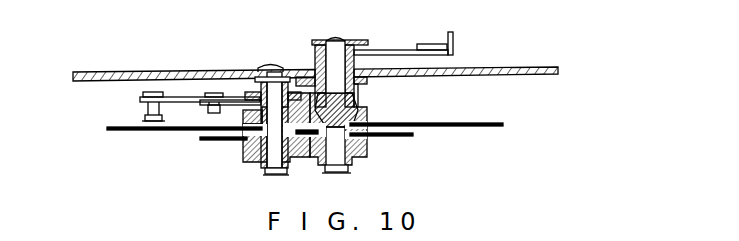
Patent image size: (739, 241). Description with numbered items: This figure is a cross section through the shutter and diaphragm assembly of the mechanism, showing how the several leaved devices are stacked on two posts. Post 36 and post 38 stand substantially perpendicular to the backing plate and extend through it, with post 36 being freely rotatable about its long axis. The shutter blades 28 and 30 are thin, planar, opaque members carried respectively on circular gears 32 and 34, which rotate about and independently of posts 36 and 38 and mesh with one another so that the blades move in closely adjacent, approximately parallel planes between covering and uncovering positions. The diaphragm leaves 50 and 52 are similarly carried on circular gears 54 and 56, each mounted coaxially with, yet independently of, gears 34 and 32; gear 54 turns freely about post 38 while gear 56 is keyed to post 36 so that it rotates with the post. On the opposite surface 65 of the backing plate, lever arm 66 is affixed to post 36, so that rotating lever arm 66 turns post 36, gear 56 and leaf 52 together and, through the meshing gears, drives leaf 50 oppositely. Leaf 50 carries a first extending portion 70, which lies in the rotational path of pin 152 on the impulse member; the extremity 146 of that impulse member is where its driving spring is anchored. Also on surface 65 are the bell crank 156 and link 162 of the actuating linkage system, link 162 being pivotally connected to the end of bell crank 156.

The blade 28 is at (200, 139).
The blade 30 is at (412, 137).
The circular gear 32 is at (357, 158).
The circular gear 34 is at (247, 158).
The post 36 is at (334, 55).
The post 38 is at (273, 83).
The leaf 50 is at (107, 129).
The leaf 52 is at (502, 127).
The circular gear 54 is at (243, 112).
The circular gear 56 is at (366, 112).
The opposite surface 65 is at (196, 72).
The lever arm 66 is at (357, 45).
The first extending portion 70 is at (233, 102).
The extremity 146 is at (178, 97).
The pin 152 is at (212, 108).
The bell crank 156 is at (395, 51).
The link 162 is at (433, 44).